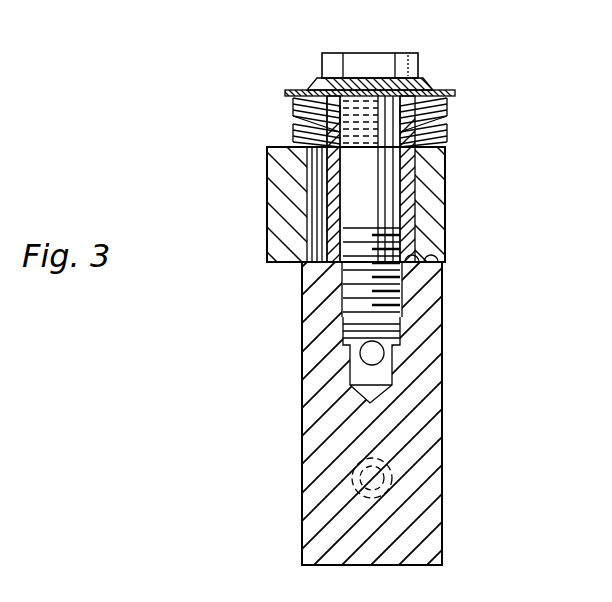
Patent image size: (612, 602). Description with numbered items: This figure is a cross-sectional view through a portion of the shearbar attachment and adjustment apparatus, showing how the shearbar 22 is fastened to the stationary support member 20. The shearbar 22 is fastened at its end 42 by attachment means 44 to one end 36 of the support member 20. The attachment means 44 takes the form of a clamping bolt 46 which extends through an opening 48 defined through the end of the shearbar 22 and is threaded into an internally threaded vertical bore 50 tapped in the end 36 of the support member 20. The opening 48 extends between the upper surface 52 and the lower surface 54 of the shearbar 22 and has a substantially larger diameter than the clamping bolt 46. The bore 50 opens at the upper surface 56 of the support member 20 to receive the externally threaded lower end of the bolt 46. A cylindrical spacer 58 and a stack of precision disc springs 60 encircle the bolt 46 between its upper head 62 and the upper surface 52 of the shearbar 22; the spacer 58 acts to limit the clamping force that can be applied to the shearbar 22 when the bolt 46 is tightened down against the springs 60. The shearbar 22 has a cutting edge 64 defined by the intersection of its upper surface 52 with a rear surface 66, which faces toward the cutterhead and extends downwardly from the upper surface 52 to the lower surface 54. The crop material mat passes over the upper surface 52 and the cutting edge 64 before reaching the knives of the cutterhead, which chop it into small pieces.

The support member 20 is at (452, 410).
The shearbar 22 is at (455, 202).
The end of support member 36 is at (437, 497).
The end of shearbar 42 is at (445, 170).
The attachment means 44 is at (470, 67).
The clamping bolt 46 is at (320, 227).
The opening 48 is at (360, 203).
The vertical bore 50 is at (392, 336).
The upper surface of shearbar 52 is at (273, 147).
The lower surface of shearbar 54 is at (292, 263).
The upper surface of support member 56 is at (437, 255).
The cylindrical spacer 58 is at (407, 183).
The disc springs 60 is at (447, 130).
The upper head 62 is at (373, 63).
The cutting edge 64 is at (267, 147).
The rear surface 66 is at (267, 177).